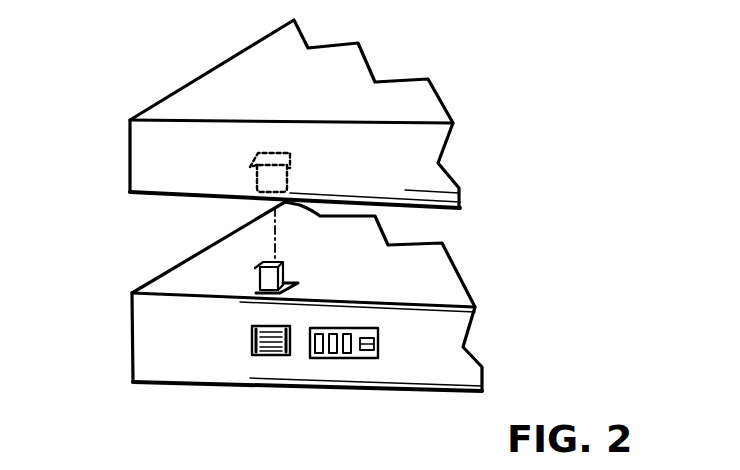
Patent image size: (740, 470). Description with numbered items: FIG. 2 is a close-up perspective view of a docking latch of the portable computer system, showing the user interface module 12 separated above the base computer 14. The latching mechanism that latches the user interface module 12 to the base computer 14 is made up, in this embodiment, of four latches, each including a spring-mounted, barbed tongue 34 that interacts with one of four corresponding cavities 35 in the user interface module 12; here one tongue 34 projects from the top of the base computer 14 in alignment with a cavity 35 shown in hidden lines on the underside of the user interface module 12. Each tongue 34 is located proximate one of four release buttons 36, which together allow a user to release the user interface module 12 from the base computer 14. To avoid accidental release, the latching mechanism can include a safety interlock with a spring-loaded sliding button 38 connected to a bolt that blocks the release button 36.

The user interface module 12 is at (128, 163).
The base computer 14 is at (170, 265).
The spring-mounted, barbed tongue 34 is at (283, 265).
The cavity 35 is at (290, 161).
The release button 36 is at (250, 336).
The spring-loaded sliding button 38 is at (382, 345).